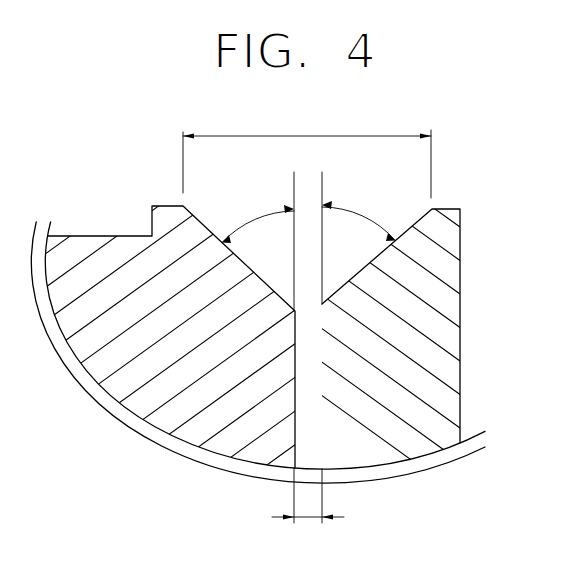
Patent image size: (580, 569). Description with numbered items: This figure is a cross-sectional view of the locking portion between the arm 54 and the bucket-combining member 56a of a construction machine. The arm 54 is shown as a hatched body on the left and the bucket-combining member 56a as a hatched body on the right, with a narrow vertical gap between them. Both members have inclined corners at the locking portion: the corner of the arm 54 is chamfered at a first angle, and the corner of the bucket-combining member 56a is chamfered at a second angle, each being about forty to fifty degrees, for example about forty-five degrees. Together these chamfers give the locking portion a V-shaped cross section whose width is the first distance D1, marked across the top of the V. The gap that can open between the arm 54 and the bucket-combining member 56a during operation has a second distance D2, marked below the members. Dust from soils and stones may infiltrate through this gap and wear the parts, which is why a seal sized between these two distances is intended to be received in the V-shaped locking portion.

The arm 54 is at (86, 250).
The bucket-combining member 56a is at (447, 329).
The first distance D1 is at (307, 153).
The second distance D2 is at (308, 531).